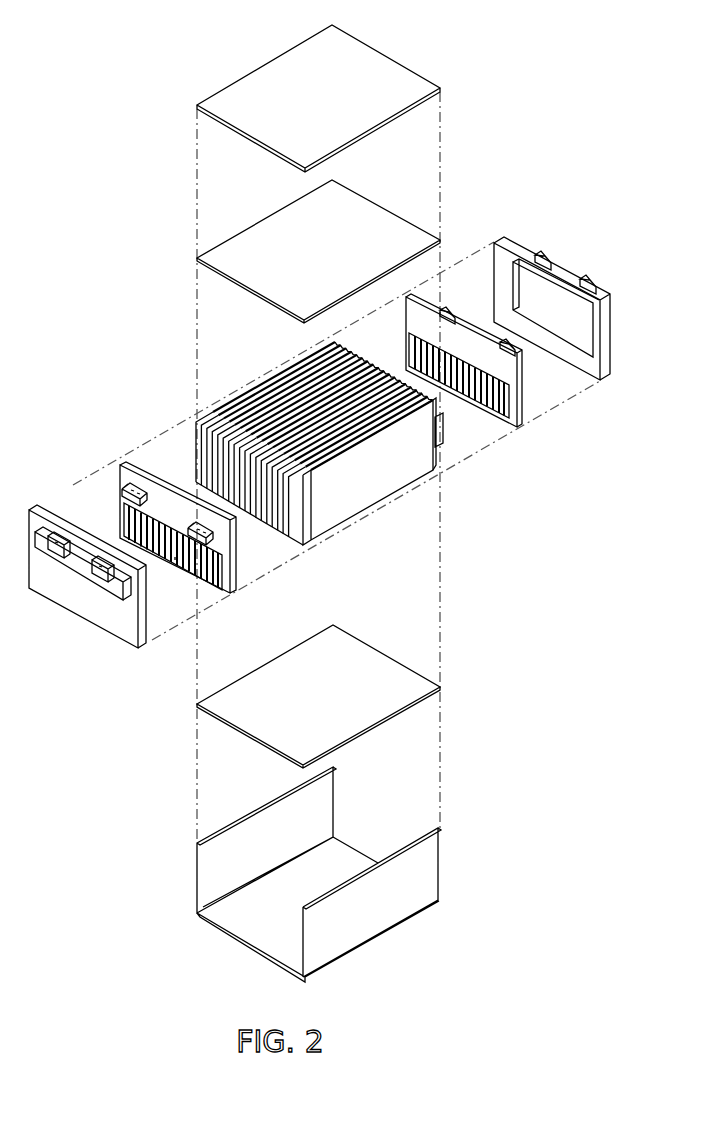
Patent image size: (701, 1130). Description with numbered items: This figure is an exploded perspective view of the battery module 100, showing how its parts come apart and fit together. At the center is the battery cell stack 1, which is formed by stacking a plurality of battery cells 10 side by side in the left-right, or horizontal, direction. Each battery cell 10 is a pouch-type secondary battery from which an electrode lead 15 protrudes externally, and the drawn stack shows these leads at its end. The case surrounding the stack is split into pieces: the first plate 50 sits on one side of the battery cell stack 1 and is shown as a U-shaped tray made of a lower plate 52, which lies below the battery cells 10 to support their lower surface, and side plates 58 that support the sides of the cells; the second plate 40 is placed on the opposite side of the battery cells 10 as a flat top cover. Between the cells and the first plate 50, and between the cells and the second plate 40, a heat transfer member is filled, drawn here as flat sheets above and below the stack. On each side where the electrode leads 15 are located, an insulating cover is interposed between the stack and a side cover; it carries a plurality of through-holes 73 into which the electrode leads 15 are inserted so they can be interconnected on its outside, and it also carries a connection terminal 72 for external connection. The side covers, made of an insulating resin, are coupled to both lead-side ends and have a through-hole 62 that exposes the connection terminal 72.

The battery module 100 is at (70, 296).
The battery cell stack 1 is at (337, 460).
The battery cell 10 is at (340, 498).
The electrode lead 15 is at (442, 433).
The second plate 40 is at (375, 58).
The first plate 50 is at (278, 874).
The lower plate 52 is at (148, 886).
The side plate 58 is at (197, 892).
The through-hole 62 is at (113, 581).
The connection terminal 72 is at (127, 483).
The through-hole 73 is at (175, 560).